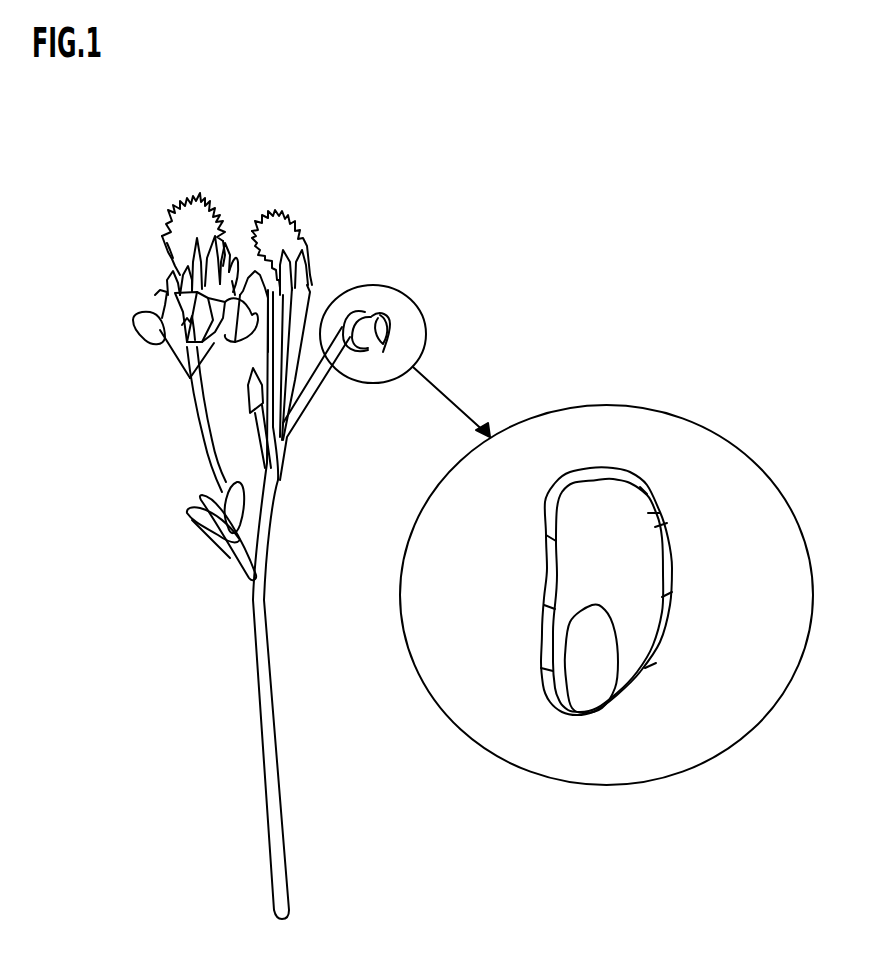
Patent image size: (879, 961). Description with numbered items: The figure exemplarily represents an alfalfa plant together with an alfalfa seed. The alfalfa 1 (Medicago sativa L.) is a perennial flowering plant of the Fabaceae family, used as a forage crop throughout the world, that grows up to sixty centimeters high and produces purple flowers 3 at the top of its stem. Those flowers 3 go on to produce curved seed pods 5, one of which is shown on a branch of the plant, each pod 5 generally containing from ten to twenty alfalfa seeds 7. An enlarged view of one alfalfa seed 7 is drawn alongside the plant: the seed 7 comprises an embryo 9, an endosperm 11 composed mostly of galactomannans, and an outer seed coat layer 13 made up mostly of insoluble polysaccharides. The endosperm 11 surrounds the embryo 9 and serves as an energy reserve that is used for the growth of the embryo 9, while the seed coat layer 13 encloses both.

The alfalfa 1 is at (280, 542).
The purple flowers 3 is at (156, 294).
The curved seed pod 5 is at (392, 316).
The alfalfa seed 7 is at (606, 576).
The embryo 9 is at (595, 671).
The endosperm 11 is at (609, 556).
The seed coat layer 13 is at (653, 513).